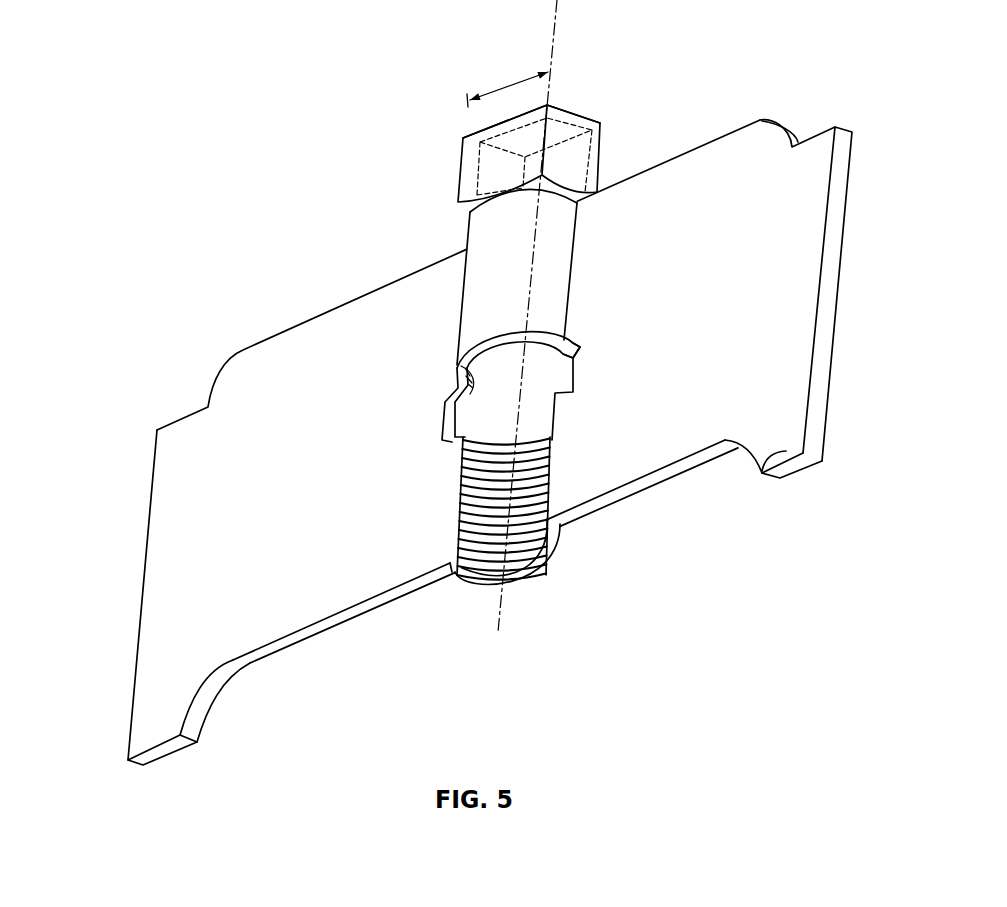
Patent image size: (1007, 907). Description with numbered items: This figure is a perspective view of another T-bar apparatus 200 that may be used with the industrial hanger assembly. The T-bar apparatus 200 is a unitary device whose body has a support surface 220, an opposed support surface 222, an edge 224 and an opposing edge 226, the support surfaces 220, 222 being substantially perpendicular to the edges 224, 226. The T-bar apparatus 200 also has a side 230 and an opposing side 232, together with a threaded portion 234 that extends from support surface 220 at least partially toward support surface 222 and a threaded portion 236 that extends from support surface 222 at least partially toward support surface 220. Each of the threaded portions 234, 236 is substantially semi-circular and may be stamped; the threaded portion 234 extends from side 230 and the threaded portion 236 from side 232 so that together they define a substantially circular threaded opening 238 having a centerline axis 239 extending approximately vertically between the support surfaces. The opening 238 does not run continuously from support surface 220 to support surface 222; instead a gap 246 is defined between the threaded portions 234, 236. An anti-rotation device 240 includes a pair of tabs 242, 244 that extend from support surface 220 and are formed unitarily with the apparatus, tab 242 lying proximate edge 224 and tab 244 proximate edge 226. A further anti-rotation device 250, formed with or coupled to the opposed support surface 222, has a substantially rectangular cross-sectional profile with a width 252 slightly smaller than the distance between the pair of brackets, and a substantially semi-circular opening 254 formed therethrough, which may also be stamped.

The T-bar apparatus 200 is at (745, 96).
The support surface 220 is at (320, 627).
The opposed support surface 222 is at (318, 315).
The edge 224 is at (142, 587).
The opposing edge 226 is at (828, 293).
The side 230 is at (303, 541).
The opposing side 232 is at (605, 505).
The threaded portion 234 is at (463, 463).
The threaded portion 236 is at (458, 369).
The threaded opening 238 is at (371, 335).
The centerline axis 239 is at (555, 35).
The anti-rotation device 240 is at (121, 756).
The tab 242 is at (143, 730).
The tab 244 is at (762, 470).
The gap 246 is at (562, 379).
The anti-rotation device 250 is at (460, 168).
The width 252 is at (518, 83).
The semi-circular opening 254 is at (508, 140).